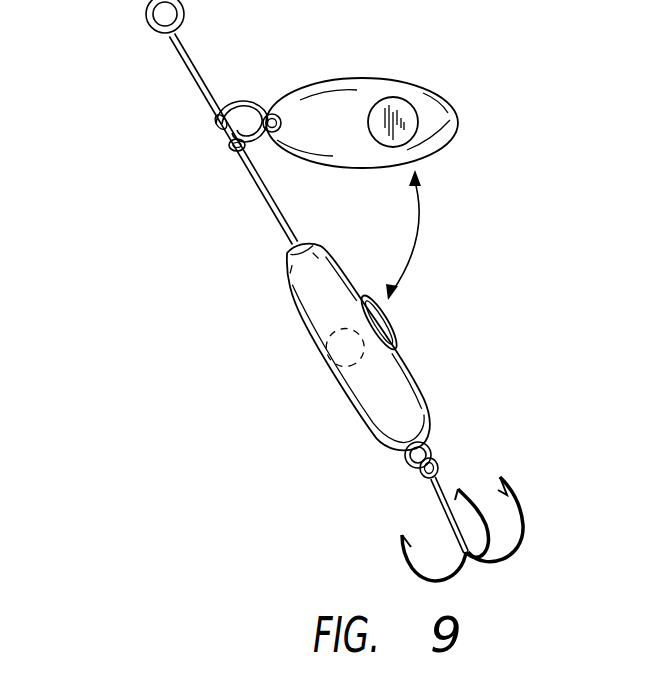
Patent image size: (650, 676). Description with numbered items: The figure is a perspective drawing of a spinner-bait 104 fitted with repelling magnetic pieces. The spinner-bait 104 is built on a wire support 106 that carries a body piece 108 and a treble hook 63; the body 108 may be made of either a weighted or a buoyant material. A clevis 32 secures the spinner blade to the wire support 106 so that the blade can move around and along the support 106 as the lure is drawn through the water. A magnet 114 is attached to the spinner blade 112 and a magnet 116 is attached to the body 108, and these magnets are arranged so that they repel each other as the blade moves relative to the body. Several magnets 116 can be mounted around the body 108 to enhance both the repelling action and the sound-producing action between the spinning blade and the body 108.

The spinner-bait 104 is at (168, 299).
The wire support 106 is at (196, 83).
The clevis 32 is at (215, 123).
The spinner blade 112 is at (460, 116).
The magnet 114 is at (410, 103).
The magnet 116 is at (397, 325).
The body piece 108 is at (355, 408).
The treble hook 63 is at (522, 503).